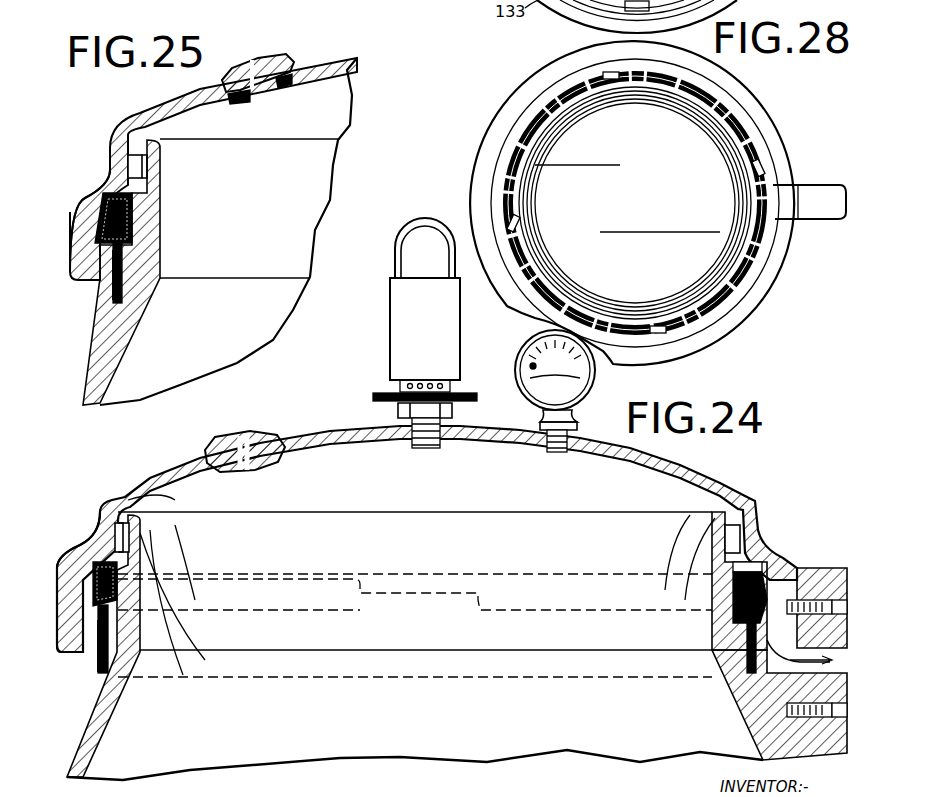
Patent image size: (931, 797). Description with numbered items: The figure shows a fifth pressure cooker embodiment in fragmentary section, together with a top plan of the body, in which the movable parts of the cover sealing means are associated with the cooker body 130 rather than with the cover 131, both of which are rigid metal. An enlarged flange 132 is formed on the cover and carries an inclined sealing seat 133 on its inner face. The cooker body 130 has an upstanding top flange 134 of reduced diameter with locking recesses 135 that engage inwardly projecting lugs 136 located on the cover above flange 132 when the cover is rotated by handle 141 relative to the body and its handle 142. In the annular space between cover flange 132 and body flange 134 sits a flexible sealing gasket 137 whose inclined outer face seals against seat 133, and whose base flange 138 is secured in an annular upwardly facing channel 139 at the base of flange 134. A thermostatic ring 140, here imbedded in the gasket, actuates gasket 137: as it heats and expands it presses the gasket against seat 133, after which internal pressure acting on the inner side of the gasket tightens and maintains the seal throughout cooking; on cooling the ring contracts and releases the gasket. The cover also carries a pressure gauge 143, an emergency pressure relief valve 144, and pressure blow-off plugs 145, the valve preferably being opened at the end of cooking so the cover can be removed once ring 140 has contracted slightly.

In FIG. 25, the cooker body 130 is at (100, 373).
In FIG. 28, the cooker body 130 is at (503, 137).
In FIG. 24, the cooker body 130 is at (90, 766).
In FIG. 25, the cover 131 is at (348, 80).
In FIG. 24, the cover 131 is at (150, 485).
In FIG. 24, the enlarged flange 132 is at (64, 565).
In FIG. 25, the inclined sealing seat 133 is at (98, 258).
In FIG. 24, the inclined sealing seat 133 is at (82, 565).
In FIG. 25, the upstanding top flange 134 is at (134, 212).
In FIG. 28, the upstanding top flange 134 is at (562, 288).
In FIG. 24, the upstanding top flange 134 is at (118, 590).
In FIG. 25, the locking recesses 135 is at (145, 163).
In FIG. 24, the locking recesses 135 is at (140, 535).
In FIG. 25, the inwardly projecting lugs 136 is at (148, 182).
In FIG. 28, the inwardly projecting lugs 136 is at (613, 80).
In FIG. 24, the inwardly projecting lugs 136 is at (150, 560).
In FIG. 25, the flexible sealing gasket 137 is at (90, 196).
In FIG. 28, the flexible sealing gasket 137 is at (528, 125).
In FIG. 24, the flexible sealing gasket 137 is at (98, 528).
In FIG. 25, the base flange 138 is at (120, 290).
In FIG. 24, the base flange 138 is at (123, 625).
In FIG. 25, the annular upwardly facing channel 139 is at (122, 298).
In FIG. 24, the annular upwardly facing channel 139 is at (106, 660).
In FIG. 25, the thermostatic ring 140 is at (130, 228).
In FIG. 24, the thermostatic ring 140 is at (120, 605).
In FIG. 24, the cover handle 141 is at (818, 567).
In FIG. 28, the body handle 142 is at (812, 198).
In FIG. 24, the body handle 142 is at (832, 745).
In FIG. 24, the pressure gauge 143 is at (540, 385).
In FIG. 24, the emergency pressure relief valve 144 is at (410, 318).
In FIG. 25, the pressure blow-off plugs 145 is at (283, 90).
In FIG. 24, the pressure blow-off plugs 145 is at (236, 434).